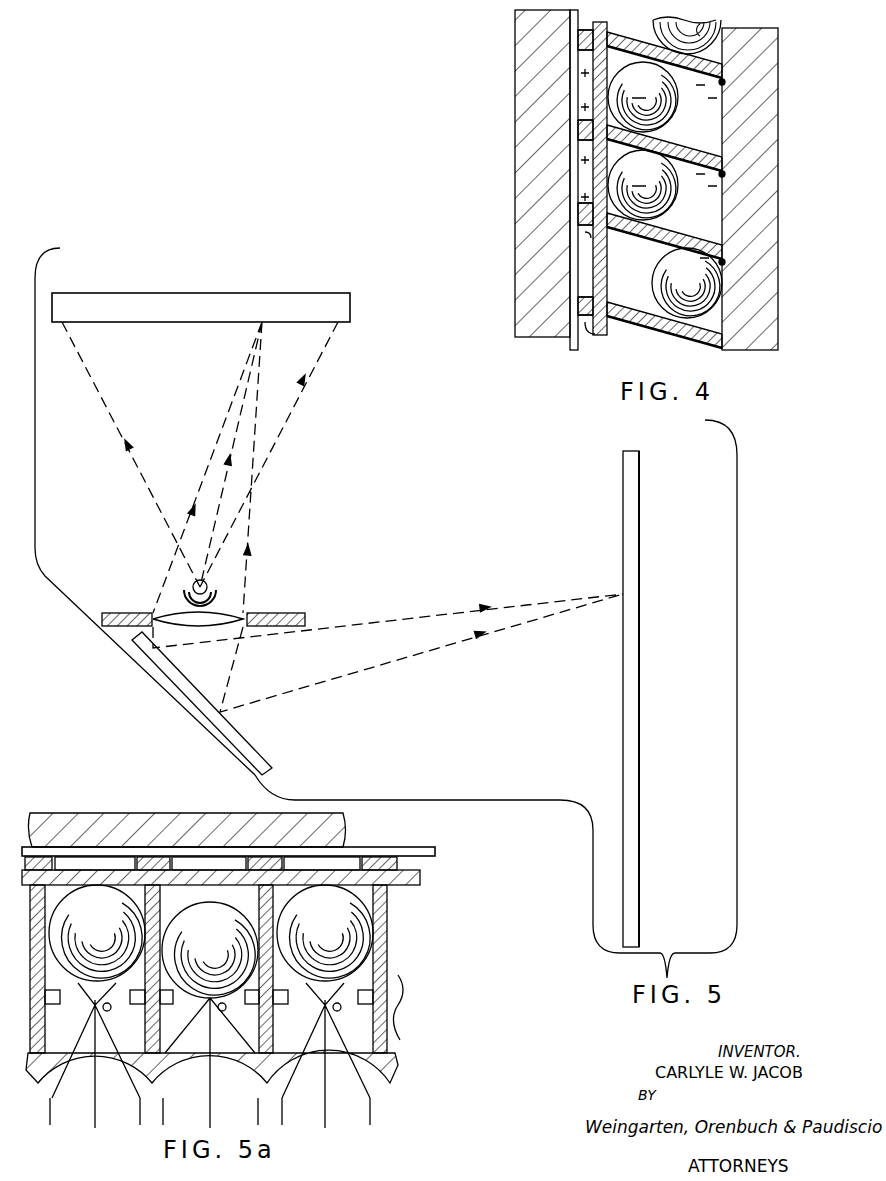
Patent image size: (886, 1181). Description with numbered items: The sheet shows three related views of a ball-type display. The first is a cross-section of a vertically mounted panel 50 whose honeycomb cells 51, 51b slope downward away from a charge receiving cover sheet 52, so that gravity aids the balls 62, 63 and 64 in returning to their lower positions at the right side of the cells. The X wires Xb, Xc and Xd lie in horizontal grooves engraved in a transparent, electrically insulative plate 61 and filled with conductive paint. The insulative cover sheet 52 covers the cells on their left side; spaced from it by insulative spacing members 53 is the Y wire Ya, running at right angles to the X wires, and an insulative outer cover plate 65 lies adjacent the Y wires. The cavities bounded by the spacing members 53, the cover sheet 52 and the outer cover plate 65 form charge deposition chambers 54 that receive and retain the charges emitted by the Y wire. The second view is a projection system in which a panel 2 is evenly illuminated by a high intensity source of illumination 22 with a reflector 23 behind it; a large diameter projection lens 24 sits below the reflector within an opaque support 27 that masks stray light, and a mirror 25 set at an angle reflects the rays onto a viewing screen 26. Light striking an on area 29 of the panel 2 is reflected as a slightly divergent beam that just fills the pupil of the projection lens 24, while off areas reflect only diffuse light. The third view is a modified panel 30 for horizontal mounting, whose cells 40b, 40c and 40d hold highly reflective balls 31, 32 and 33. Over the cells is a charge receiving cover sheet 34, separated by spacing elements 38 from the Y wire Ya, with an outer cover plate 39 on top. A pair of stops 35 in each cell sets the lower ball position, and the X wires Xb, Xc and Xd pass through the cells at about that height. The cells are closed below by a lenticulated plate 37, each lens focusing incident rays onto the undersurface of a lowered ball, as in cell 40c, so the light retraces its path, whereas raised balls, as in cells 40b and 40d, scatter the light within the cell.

In FIG. 5, the panel 2 is at (245, 300).
In FIG. 5, the source of illumination 22 is at (207, 586).
In FIG. 5, the reflector 23 is at (215, 601).
In FIG. 5, the projection lens 24 is at (247, 612).
In FIG. 5, the mirror 25 is at (252, 742).
In FIG. 5, the viewing screen 26 is at (628, 662).
In FIG. 5, the opaque support 27 is at (293, 612).
In FIG. 5, the on area 29 is at (265, 325).
In FIG. 5A, the modified panel 30 is at (478, 980).
In FIG. 5A, the reflective ball 31 is at (82, 926).
In FIG. 5A, the reflective ball 32 is at (194, 950).
In FIG. 5A, the reflective ball 33 is at (312, 928).
In FIG. 5A, the charge receiving cover sheet 34 is at (426, 880).
In FIG. 5A, the stops 35 is at (388, 998).
In FIG. 5A, the lenticulated plate 37 is at (382, 1095).
In FIG. 5A, the spacing elements 38 is at (432, 853).
In FIG. 5A, the outer cover plate 39 is at (345, 836).
In FIG. 5A, the honeycomb cell 40b is at (64, 1015).
In FIG. 5A, the honeycomb cell 40c is at (178, 1015).
In FIG. 5A, the honeycomb cell 40d is at (293, 1015).
In FIG. 4, the panel 50 is at (488, 110).
In FIG. 4, the honeycomb cell 51 is at (659, 185).
In FIG. 4, the honeycomb cell 51b is at (702, 123).
In FIG. 4, the charge receiving cover sheet 52 is at (605, 24).
In FIG. 4, the insulative spacing members 53 is at (585, 240).
In FIG. 4, the charge deposition chambers 54 is at (585, 176).
In FIG. 4, the insulative plate 61 is at (764, 22).
In FIG. 4, the ball 62 is at (643, 97).
In FIG. 4, the ball 63 is at (643, 185).
In FIG. 4, the ball 64 is at (687, 283).
In FIG. 4, the outer cover plate 65 is at (515, 36).
In FIG. 4, the X wire Xb is at (736, 86).
In FIG. 5A, the X wire Xb is at (111, 1007).
In FIG. 4, the X wire Xc is at (736, 176).
In FIG. 5A, the X wire Xc is at (226, 1007).
In FIG. 4, the X wire Xd is at (736, 262).
In FIG. 5A, the X wire Xd is at (341, 1007).
In FIG. 4, the Y wire Ya is at (572, 352).
In FIG. 5A, the Y wire Ya is at (440, 860).